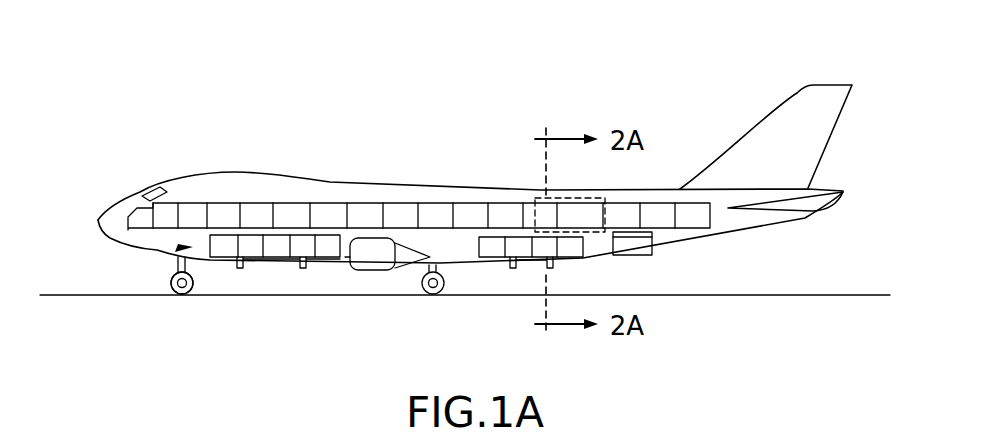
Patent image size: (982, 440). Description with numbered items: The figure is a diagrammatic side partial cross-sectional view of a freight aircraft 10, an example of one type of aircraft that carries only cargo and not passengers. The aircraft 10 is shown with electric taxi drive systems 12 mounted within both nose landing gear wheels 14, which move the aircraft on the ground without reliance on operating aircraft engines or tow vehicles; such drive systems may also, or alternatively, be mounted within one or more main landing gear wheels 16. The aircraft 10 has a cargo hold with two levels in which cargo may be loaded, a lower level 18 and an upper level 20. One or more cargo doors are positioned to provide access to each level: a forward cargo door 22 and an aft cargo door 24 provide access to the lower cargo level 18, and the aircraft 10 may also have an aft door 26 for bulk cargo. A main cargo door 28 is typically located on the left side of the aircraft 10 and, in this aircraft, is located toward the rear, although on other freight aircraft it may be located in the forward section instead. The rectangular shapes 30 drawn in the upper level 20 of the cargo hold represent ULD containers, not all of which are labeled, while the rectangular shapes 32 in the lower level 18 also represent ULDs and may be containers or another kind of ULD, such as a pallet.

The freight aircraft 10 is at (258, 95).
The electric taxi drive systems 12 is at (195, 290).
The nose landing gear wheels 14 is at (168, 290).
The main landing gear wheels 16 is at (432, 295).
The lower level 18 is at (185, 249).
The upper level 20 is at (118, 213).
The forward cargo door 22 is at (277, 270).
The aft cargo door 24 is at (530, 262).
The aft door 26 is at (637, 242).
The main cargo door 28 is at (535, 198).
The ULD containers 30 is at (255, 212).
The ULDs 32 is at (328, 258).